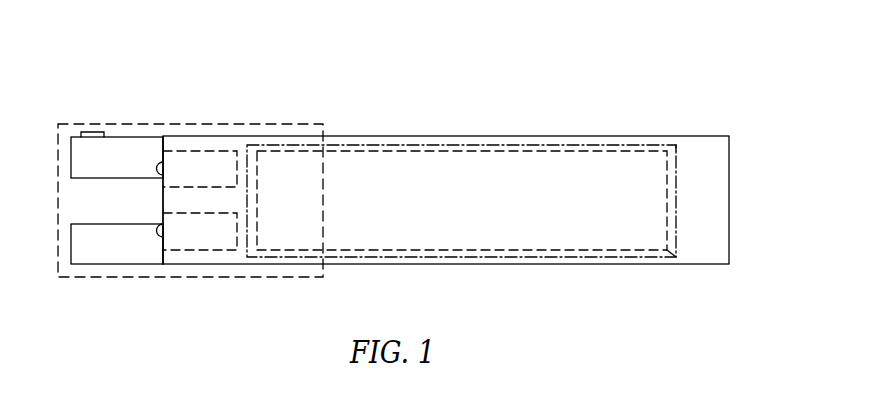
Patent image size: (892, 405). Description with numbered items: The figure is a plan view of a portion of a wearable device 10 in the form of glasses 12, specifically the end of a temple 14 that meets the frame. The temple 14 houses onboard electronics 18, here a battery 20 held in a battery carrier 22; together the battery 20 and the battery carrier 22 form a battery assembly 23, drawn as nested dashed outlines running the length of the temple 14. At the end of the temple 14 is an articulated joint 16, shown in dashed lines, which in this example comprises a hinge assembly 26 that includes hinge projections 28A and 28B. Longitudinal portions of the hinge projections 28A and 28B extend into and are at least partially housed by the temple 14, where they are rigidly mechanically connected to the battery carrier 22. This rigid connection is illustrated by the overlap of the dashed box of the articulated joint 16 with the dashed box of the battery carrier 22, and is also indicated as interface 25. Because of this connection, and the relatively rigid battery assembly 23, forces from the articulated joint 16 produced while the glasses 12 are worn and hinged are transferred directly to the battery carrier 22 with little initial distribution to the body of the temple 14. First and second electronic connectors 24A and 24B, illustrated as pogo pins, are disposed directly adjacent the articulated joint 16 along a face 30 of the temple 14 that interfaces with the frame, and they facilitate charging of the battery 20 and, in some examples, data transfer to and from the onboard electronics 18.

The wearable device 10 is at (653, 42).
The glasses 12 is at (118, 68).
The temple 14 is at (719, 167).
The articulated joint 16 is at (91, 120).
The onboard electronics 18 is at (469, 119).
The battery 20 is at (669, 249).
The battery carrier 22 is at (678, 199).
The battery assembly 23 is at (678, 140).
The first electronic connector 24A is at (203, 242).
The second electronic connector 24B is at (196, 150).
The interface 25 is at (275, 126).
The hinge assembly 26 is at (68, 283).
The hinge projection 28A is at (78, 161).
The hinge projection 28B is at (78, 246).
The face 30 is at (162, 199).